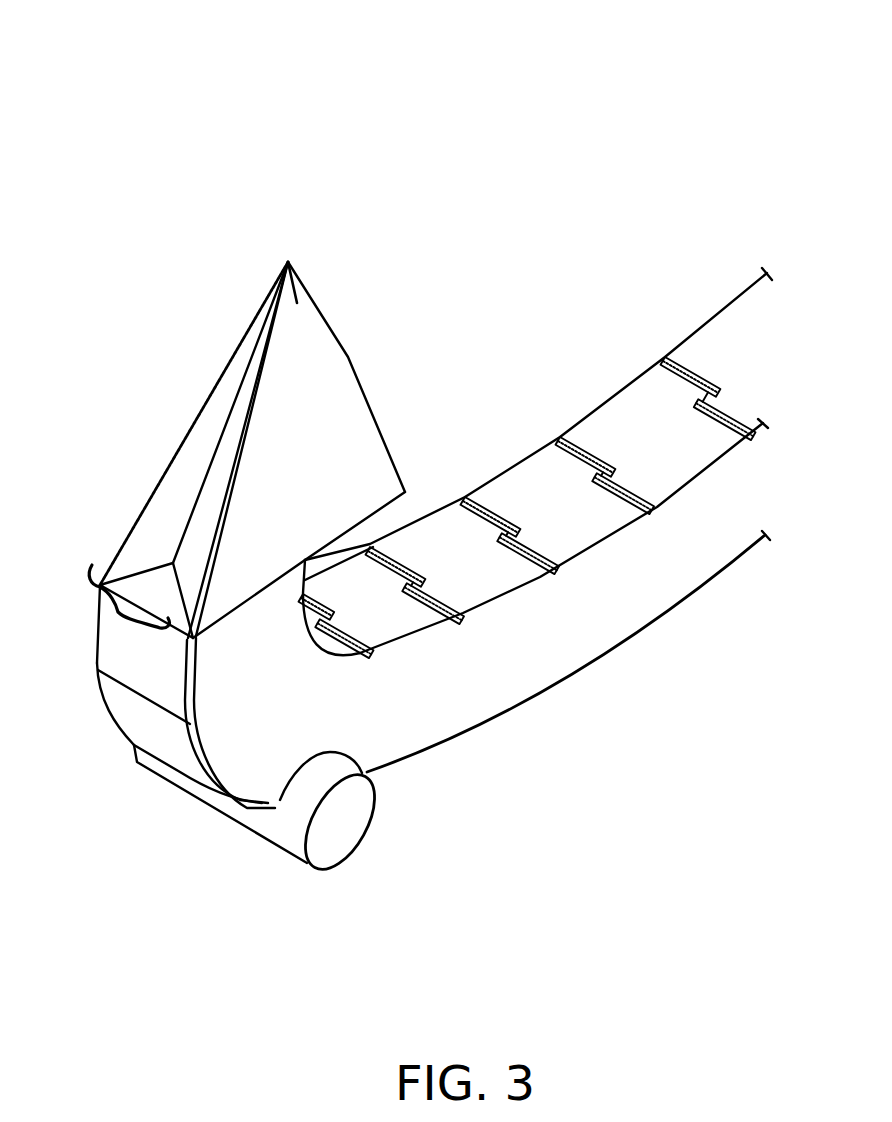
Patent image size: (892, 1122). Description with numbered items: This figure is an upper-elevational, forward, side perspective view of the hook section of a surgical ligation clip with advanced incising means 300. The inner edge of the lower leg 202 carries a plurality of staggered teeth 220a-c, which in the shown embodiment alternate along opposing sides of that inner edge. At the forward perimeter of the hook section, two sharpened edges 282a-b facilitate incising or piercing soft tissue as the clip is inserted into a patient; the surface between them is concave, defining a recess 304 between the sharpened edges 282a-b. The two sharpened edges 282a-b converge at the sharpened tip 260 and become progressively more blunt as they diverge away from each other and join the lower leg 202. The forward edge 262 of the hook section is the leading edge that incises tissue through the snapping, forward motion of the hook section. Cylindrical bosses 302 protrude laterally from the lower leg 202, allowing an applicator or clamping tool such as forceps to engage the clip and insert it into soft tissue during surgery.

The surgical ligation clip with advanced incising means 300 is at (779, 88).
The lower leg 202 is at (648, 570).
The teeth 220a-c is at (533, 543).
The sharpened tip 260 is at (290, 263).
The forward edge 262 is at (348, 357).
The sharpened edges 282a-b is at (218, 493).
The bosses 302 is at (347, 810).
The recess 304 is at (118, 603).